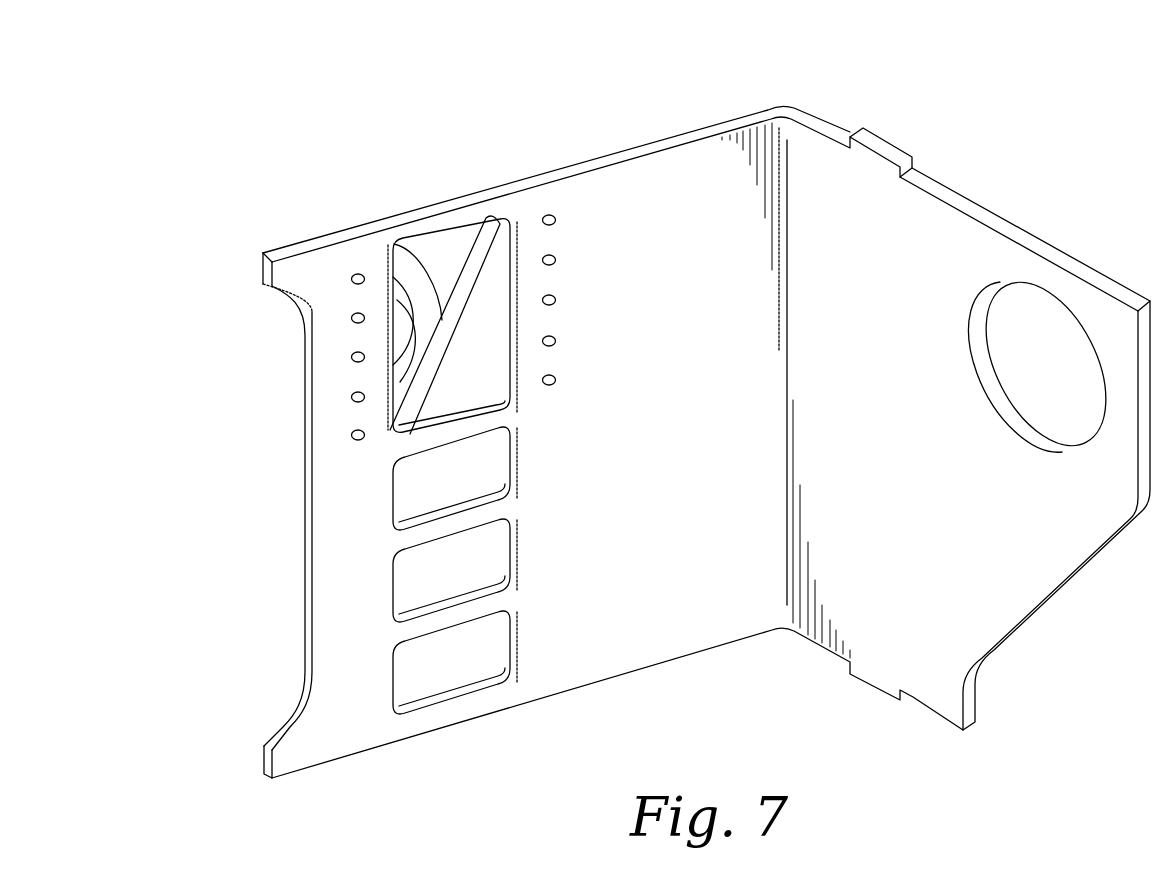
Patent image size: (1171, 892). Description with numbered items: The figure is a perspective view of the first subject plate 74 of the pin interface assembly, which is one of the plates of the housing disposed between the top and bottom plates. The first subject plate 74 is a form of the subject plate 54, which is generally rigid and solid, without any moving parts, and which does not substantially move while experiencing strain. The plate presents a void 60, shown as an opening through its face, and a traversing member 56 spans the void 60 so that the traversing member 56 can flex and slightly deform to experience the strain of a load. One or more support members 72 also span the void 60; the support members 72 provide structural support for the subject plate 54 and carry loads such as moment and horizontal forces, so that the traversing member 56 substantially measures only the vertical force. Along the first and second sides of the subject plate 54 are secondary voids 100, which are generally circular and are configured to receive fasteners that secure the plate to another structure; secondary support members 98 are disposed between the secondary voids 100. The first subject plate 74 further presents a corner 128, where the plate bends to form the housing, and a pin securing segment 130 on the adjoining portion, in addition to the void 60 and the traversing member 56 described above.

The subject plate 54 is at (548, 650).
The traversing member 56 is at (443, 322).
The void 60 is at (493, 320).
The support member 72 is at (450, 430).
The first subject plate 74 is at (683, 193).
The secondary support member 98 is at (366, 292).
The secondary void 100 is at (342, 283).
The corner 128 is at (798, 160).
The pin securing segment 130 is at (1050, 345).